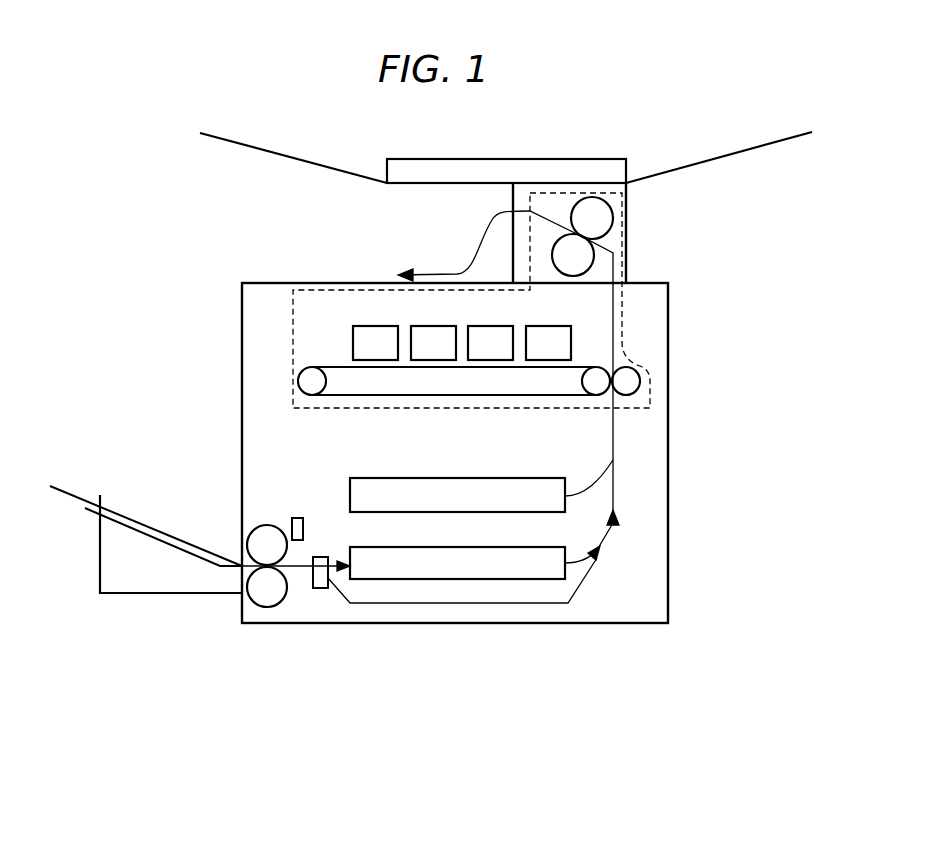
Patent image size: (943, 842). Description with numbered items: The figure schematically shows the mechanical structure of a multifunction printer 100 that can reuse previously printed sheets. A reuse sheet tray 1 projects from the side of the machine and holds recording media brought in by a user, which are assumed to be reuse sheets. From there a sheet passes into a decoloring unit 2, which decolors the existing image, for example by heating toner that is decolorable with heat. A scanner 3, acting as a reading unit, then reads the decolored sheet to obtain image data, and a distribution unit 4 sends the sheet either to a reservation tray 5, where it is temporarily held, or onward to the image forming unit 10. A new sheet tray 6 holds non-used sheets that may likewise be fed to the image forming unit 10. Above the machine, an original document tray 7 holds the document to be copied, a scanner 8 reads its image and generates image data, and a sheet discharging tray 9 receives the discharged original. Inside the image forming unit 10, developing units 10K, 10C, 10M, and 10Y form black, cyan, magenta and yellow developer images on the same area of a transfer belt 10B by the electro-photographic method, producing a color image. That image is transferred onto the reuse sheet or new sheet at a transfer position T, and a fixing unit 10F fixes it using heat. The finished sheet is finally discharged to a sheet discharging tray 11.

The multifunction printer 100 is at (458, 714).
The reuse sheet tray 1 is at (129, 522).
The decoloring unit 2 is at (266, 618).
The scanner 3 is at (298, 518).
The distribution unit 4 is at (320, 557).
The reservation tray 5 is at (542, 547).
The new sheet tray 6 is at (455, 478).
The original document tray 7 is at (718, 158).
The scanner 8 is at (506, 158).
The sheet discharging tray 9 is at (296, 160).
The image forming unit 10 is at (650, 390).
The transfer belt 10B is at (319, 367).
The fixing unit 10F is at (605, 241).
The developing unit 10K is at (378, 326).
The developing unit 10C is at (436, 326).
The developing unit 10M is at (493, 326).
The developing unit 10Y is at (551, 326).
The sheet discharging tray 11 is at (347, 283).
The transfer position T is at (622, 360).